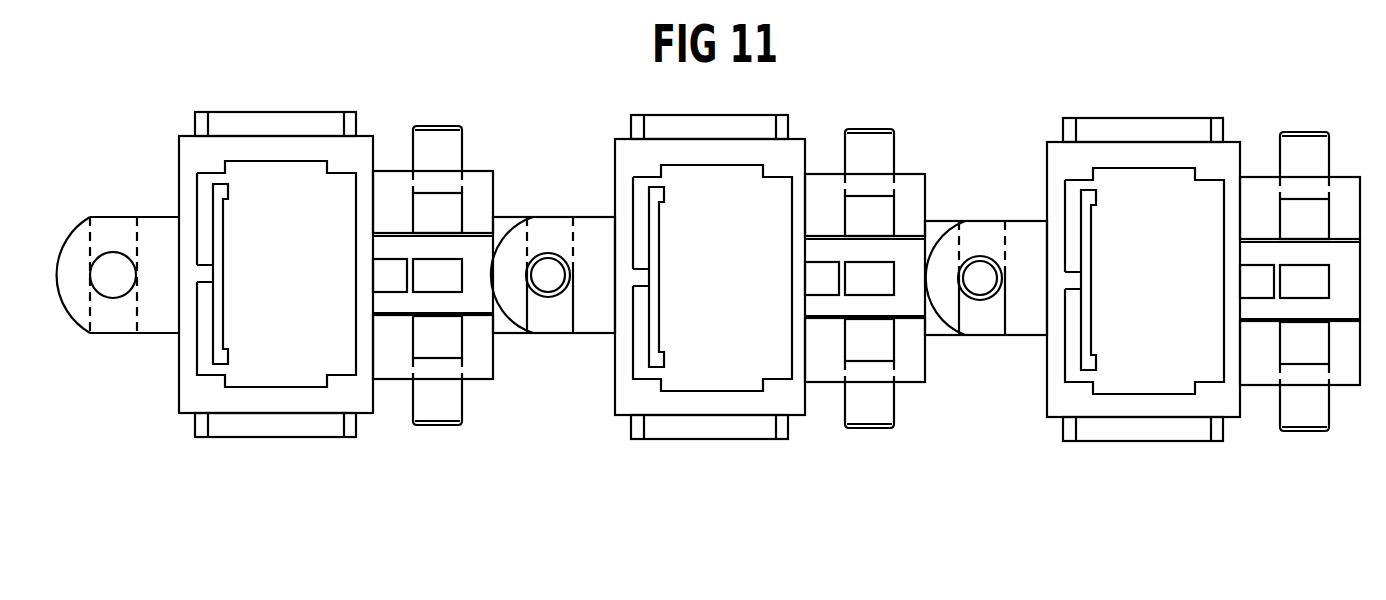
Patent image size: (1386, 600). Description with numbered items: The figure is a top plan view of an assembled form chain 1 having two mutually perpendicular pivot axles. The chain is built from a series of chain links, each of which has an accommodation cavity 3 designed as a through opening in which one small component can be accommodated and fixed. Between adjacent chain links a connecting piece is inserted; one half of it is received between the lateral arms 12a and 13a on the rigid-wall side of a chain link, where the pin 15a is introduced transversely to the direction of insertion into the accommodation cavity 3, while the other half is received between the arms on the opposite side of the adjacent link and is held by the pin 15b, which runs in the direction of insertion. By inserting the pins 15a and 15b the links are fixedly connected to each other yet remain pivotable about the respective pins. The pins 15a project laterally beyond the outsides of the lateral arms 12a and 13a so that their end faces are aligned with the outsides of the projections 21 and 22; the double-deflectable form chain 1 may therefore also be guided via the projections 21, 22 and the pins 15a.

The form chain 1 is at (948, 72).
The accommodation cavity 3 is at (294, 297).
The lateral arm 12a is at (482, 175).
The lateral arm 13a is at (477, 365).
The pin 15a is at (436, 145).
The pin 15b is at (550, 282).
The projection 21 is at (287, 124).
The projection 22 is at (260, 423).